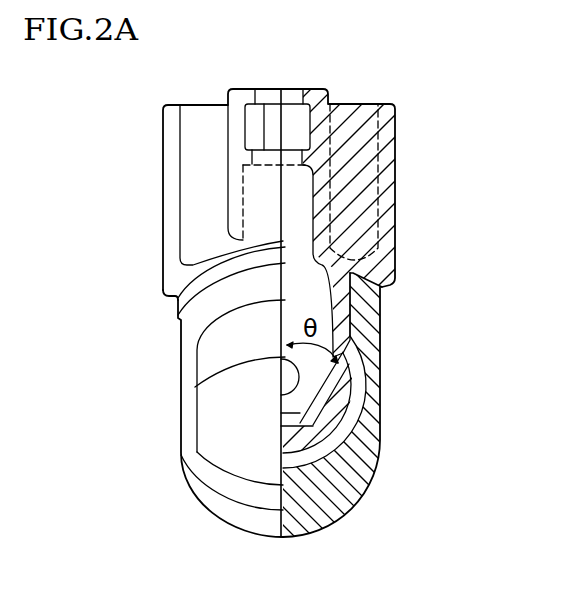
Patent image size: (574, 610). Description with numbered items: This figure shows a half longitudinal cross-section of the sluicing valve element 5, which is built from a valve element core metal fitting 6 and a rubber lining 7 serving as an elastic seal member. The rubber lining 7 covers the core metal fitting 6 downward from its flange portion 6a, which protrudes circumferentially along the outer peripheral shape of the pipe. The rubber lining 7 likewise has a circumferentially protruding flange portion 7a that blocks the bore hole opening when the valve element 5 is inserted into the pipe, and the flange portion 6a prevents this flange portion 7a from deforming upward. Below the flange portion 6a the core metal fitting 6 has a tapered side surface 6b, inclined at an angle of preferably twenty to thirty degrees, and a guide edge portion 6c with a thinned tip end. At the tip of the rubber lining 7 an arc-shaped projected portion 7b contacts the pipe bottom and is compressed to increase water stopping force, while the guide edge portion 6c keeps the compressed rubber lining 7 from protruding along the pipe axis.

The valve element 5 is at (103, 267).
The valve element core metal fitting 6 is at (333, 250).
The flange portion 6a is at (213, 253).
The tapered side surface 6b is at (327, 367).
The guide edge portion 6c is at (338, 442).
The rubber lining 7 is at (180, 335).
The flange portion 7a is at (382, 303).
The projected portion 7b is at (237, 518).